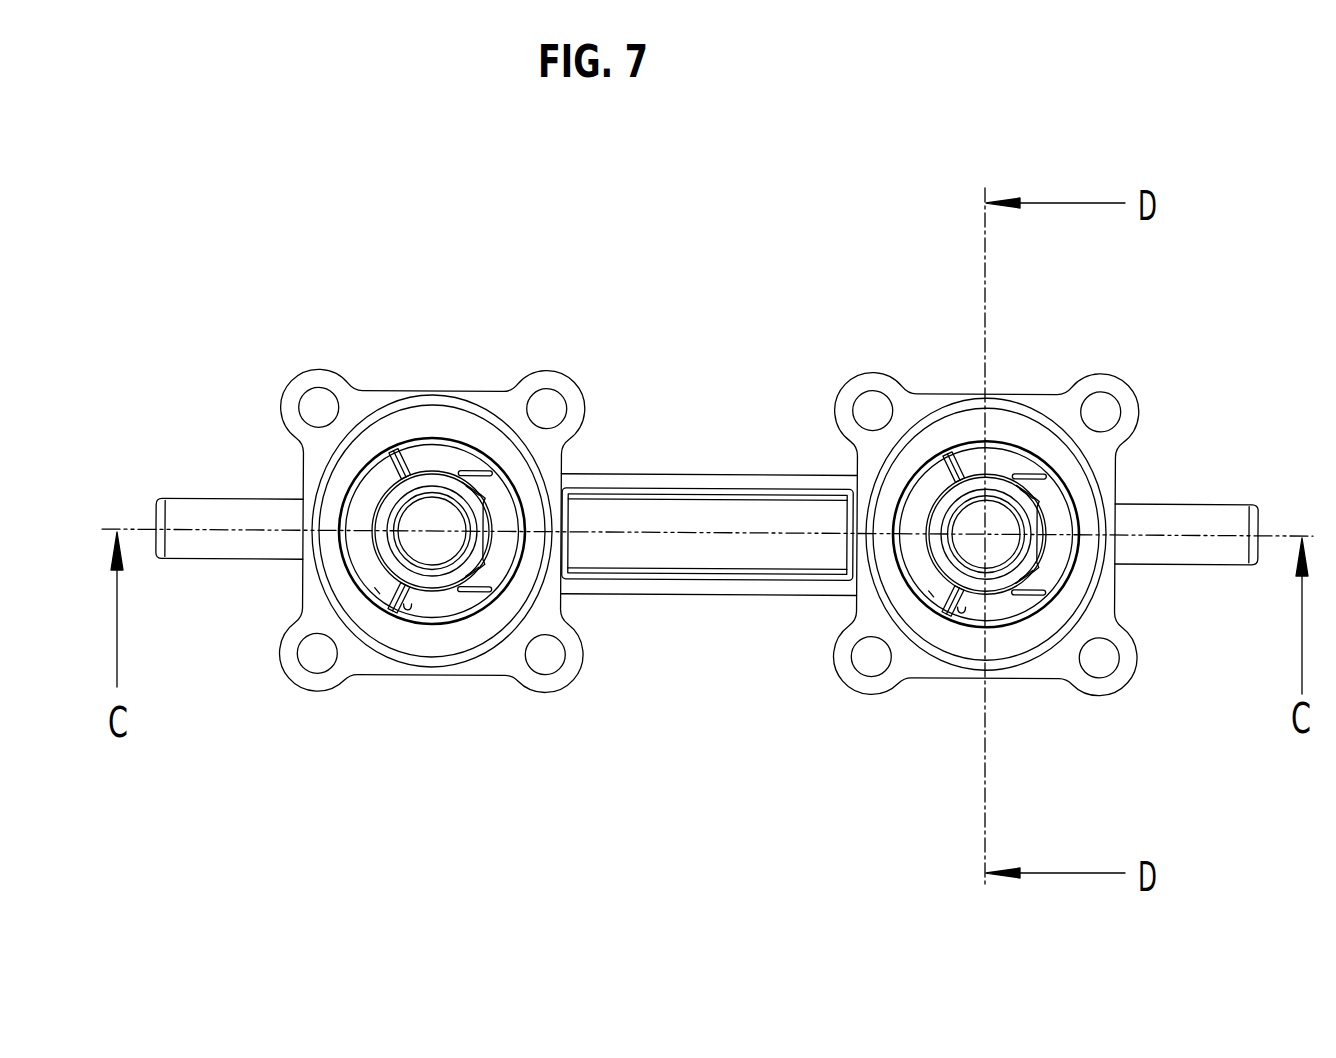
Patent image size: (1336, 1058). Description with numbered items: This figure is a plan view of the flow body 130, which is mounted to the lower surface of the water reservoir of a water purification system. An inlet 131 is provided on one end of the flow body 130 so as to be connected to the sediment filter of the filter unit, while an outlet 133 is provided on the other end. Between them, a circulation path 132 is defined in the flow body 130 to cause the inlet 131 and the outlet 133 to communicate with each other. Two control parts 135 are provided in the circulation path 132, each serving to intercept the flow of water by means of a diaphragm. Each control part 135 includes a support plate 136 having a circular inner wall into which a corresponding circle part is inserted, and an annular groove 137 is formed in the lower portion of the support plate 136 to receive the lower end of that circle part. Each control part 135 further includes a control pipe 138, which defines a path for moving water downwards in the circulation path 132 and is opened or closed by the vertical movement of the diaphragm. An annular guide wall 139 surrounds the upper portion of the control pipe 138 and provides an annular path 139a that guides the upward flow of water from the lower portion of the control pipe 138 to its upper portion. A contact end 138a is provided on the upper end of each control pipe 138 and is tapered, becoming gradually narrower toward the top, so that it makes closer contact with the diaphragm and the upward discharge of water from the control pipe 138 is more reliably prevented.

The flow body 130 is at (732, 272).
The inlet 131 is at (1215, 498).
The circulation path 132 is at (708, 512).
The outlet 133 is at (222, 498).
The control part 135 is at (488, 692).
The support plate 136 is at (457, 677).
The annular groove 137 is at (455, 427).
The control pipe 138 is at (480, 562).
The contact end 138a is at (395, 547).
The annular guide wall 139 is at (412, 614).
The annular path 139a is at (372, 607).